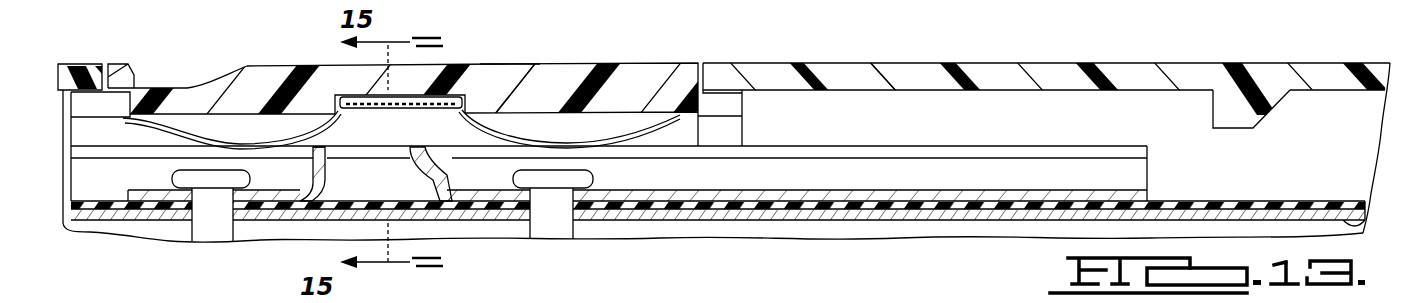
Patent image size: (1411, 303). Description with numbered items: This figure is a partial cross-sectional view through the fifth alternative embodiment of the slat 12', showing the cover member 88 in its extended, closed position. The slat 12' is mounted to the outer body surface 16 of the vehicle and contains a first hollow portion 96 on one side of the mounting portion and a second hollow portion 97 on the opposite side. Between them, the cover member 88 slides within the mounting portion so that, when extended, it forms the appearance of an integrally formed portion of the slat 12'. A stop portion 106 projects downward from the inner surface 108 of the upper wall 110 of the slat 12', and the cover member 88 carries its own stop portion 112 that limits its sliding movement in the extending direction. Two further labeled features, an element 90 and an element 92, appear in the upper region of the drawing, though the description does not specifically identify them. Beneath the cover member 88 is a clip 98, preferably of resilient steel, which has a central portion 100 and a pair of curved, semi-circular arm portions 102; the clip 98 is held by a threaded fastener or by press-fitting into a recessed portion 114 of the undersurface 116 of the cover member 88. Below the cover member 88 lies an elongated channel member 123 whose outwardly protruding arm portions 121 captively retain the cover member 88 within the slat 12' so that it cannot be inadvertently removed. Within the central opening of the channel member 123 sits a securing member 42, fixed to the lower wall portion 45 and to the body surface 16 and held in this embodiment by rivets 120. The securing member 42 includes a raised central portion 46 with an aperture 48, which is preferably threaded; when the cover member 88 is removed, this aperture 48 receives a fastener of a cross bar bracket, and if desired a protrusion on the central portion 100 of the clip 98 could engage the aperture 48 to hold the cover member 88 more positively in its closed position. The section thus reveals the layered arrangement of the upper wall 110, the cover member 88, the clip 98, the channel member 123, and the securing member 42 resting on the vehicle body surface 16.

The slat 12' is at (906, 56).
The outer body surface 16 is at (1358, 230).
The securing member 42 is at (312, 173).
The lower wall portion 45 is at (1327, 207).
The raised central portion 46 is at (345, 151).
The aperture 48 is at (364, 153).
The cover member 88 is at (508, 56).
The cover 90 is at (167, 87).
The ramp 92 is at (247, 66).
The first hollow portion 96 is at (862, 118).
The second hollow portion 97 is at (63, 110).
The clip 98 is at (452, 128).
The central portion 100 is at (401, 120).
The semi-circular arm portions 102 is at (137, 132).
The stop portion 106 is at (1240, 67).
The inner surface 108 is at (1136, 93).
The upper wall 110 is at (1007, 63).
The stop portion 112 is at (118, 63).
The recessed portion 114 is at (350, 95).
The undersurface 116 is at (541, 112).
The rivets 120 is at (208, 230).
The arm portions 121 is at (1083, 145).
The elongated channel member 123 is at (1158, 174).